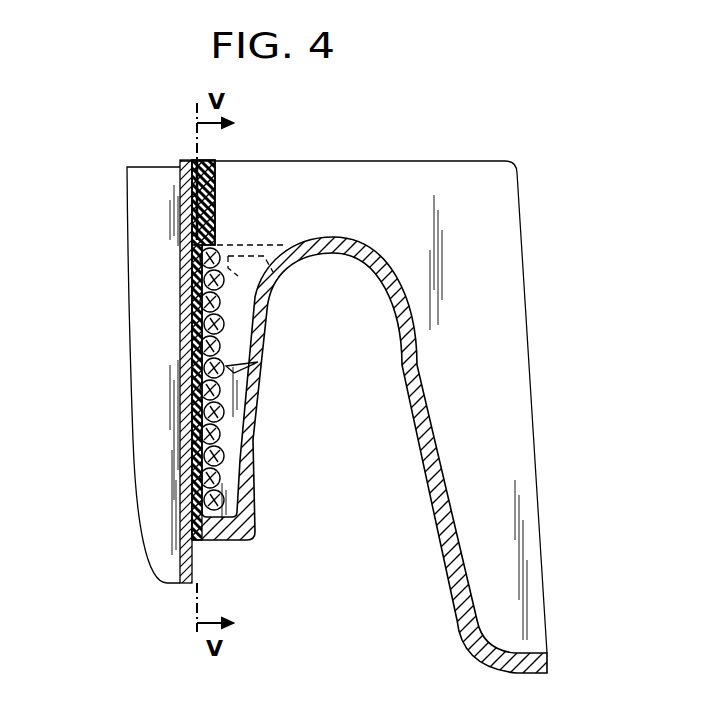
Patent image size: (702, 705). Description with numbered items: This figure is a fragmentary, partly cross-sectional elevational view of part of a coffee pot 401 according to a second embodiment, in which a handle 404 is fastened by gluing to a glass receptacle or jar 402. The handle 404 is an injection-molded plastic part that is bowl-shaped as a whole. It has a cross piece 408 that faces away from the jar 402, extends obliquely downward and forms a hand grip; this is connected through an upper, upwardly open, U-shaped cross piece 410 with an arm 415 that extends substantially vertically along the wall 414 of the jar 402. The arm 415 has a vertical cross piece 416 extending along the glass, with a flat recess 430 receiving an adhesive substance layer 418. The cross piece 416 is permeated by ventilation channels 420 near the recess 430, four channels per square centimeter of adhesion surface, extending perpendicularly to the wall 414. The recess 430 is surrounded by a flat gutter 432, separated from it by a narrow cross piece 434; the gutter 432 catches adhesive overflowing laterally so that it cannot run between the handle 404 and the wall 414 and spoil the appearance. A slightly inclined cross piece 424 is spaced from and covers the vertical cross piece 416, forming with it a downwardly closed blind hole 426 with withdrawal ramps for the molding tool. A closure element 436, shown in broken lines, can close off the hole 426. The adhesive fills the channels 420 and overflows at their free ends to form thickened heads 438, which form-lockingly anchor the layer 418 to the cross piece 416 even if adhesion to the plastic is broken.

The coffee pot 401 is at (139, 154).
The glass receptacle or jar 402 is at (137, 309).
The handle 404 is at (480, 149).
The cross piece 408 is at (517, 407).
The upper, upwardly open, U-shaped cross piece 410 is at (358, 167).
The wall 414 is at (180, 339).
The arm 415 is at (266, 458).
The vertical cross piece 416 is at (213, 218).
The adhesive substance layer 418 is at (211, 433).
The ventilation channels 420 is at (213, 310).
The slightly inclined cross piece 424 is at (223, 403).
The blind hole 426 is at (228, 425).
The flat recess 430 is at (194, 493).
The flat gutter 432 is at (196, 255).
The narrow cross piece 434 is at (197, 268).
The closure element 436 is at (276, 243).
The thickened head 438 is at (258, 370).